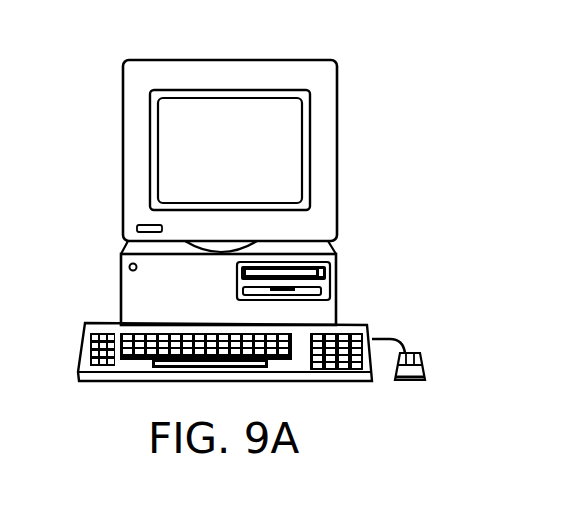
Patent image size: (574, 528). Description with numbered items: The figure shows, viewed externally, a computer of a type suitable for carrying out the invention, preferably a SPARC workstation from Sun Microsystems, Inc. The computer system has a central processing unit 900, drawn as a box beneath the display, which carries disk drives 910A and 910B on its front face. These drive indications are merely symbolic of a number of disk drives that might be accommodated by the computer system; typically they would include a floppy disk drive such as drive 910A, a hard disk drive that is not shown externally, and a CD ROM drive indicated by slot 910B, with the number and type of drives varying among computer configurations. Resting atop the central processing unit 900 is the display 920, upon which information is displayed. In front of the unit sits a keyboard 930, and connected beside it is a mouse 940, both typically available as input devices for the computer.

The central processing unit 900 is at (121, 262).
The floppy disk drive 910A is at (336, 267).
The CD ROM drive slot 910B is at (336, 292).
The display 920 is at (337, 124).
The keyboard 930 is at (352, 382).
The mouse 940 is at (425, 365).